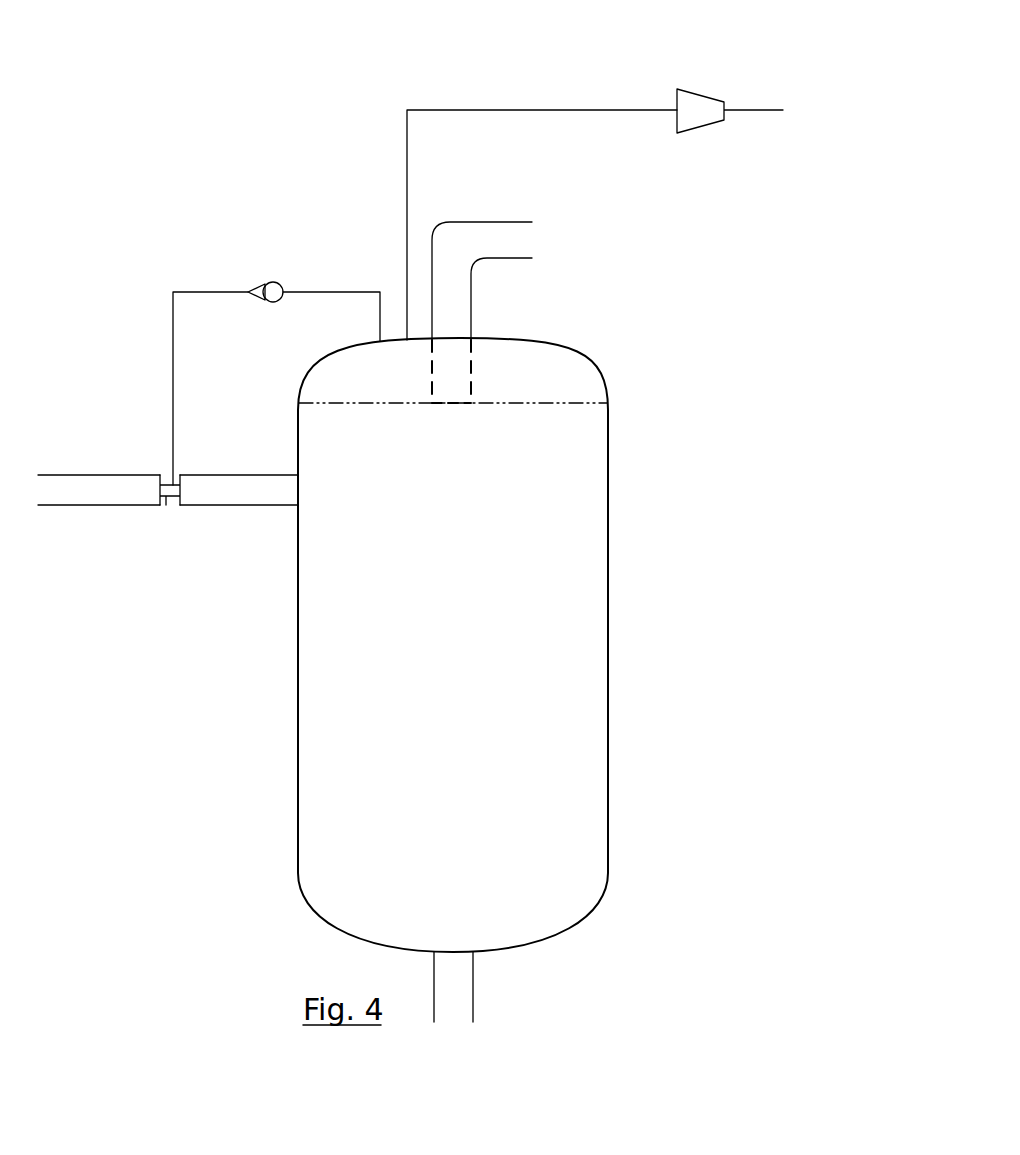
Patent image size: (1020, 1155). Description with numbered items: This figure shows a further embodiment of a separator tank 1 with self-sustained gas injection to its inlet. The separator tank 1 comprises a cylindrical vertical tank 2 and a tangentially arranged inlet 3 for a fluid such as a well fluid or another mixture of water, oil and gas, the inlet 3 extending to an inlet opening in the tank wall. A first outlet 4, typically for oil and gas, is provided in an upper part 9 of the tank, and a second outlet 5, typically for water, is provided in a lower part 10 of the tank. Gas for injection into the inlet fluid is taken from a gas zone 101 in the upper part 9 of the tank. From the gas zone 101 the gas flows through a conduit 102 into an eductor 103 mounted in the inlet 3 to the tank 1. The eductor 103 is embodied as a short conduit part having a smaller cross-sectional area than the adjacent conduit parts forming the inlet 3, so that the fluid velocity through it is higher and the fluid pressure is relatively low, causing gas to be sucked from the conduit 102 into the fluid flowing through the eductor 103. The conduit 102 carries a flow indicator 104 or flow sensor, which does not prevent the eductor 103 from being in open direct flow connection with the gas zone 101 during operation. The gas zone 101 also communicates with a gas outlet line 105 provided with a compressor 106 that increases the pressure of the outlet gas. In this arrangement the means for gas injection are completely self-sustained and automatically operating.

The separator tank 1 is at (636, 489).
The cylindrical vertical tank 2 is at (610, 415).
The inlet 3 is at (120, 490).
The first outlet 4 is at (497, 237).
The second outlet 5 is at (465, 1005).
The upper part 9 is at (508, 440).
The lower part 10 is at (577, 858).
The gas zone 101 is at (393, 370).
The conduit 102 is at (197, 291).
The eductor 103 is at (168, 490).
The flow indicator 104 is at (274, 291).
The gas outlet line 105 is at (471, 109).
The compressor 106 is at (700, 112).